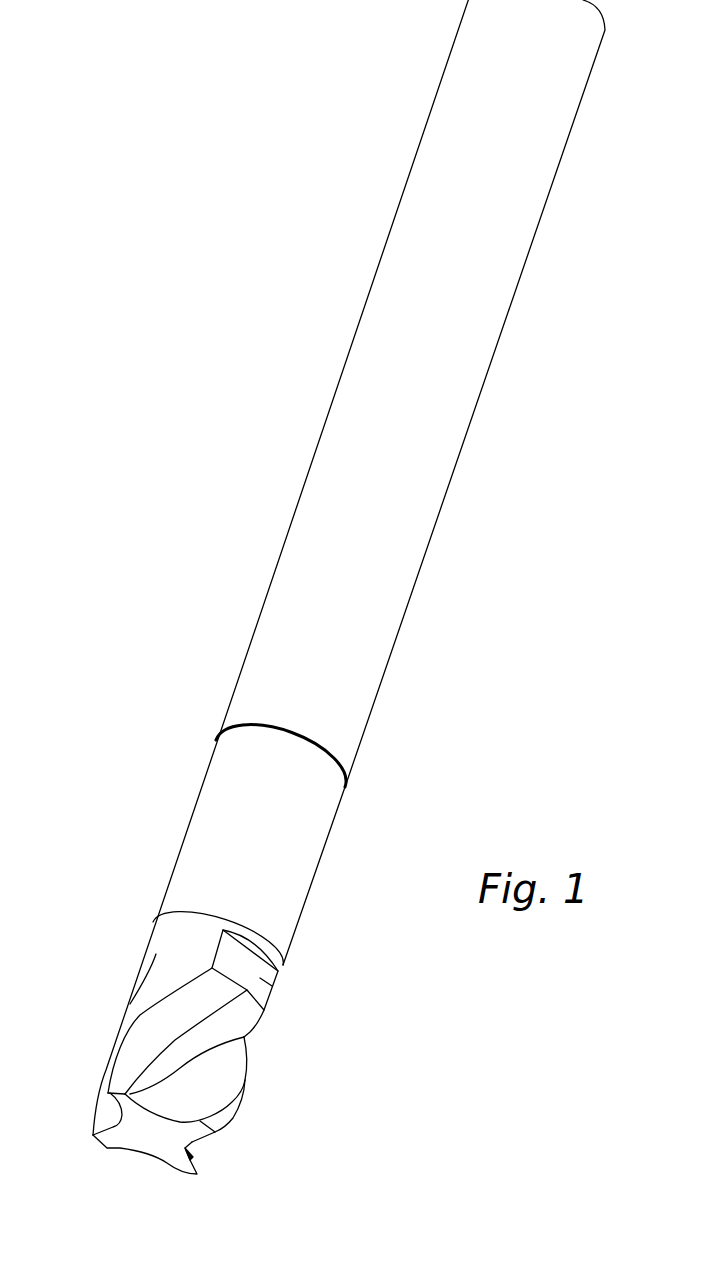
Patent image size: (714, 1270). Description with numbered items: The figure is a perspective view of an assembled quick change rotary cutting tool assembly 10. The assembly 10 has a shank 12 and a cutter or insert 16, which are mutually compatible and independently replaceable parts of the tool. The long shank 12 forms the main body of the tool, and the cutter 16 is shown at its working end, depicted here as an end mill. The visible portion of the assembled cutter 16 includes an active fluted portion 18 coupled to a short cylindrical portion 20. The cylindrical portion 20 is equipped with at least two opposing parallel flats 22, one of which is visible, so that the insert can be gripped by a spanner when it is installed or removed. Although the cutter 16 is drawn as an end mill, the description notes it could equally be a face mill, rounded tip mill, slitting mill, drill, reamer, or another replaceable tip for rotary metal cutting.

The quick change rotary cutting tool assembly 10 is at (287, 126).
The shank 12 is at (343, 368).
The cutter or insert 16 is at (103, 1070).
The active fluted portion 18 is at (236, 1115).
The short cylindrical portion 20 is at (156, 947).
The opposing parallel flats 22 is at (272, 985).